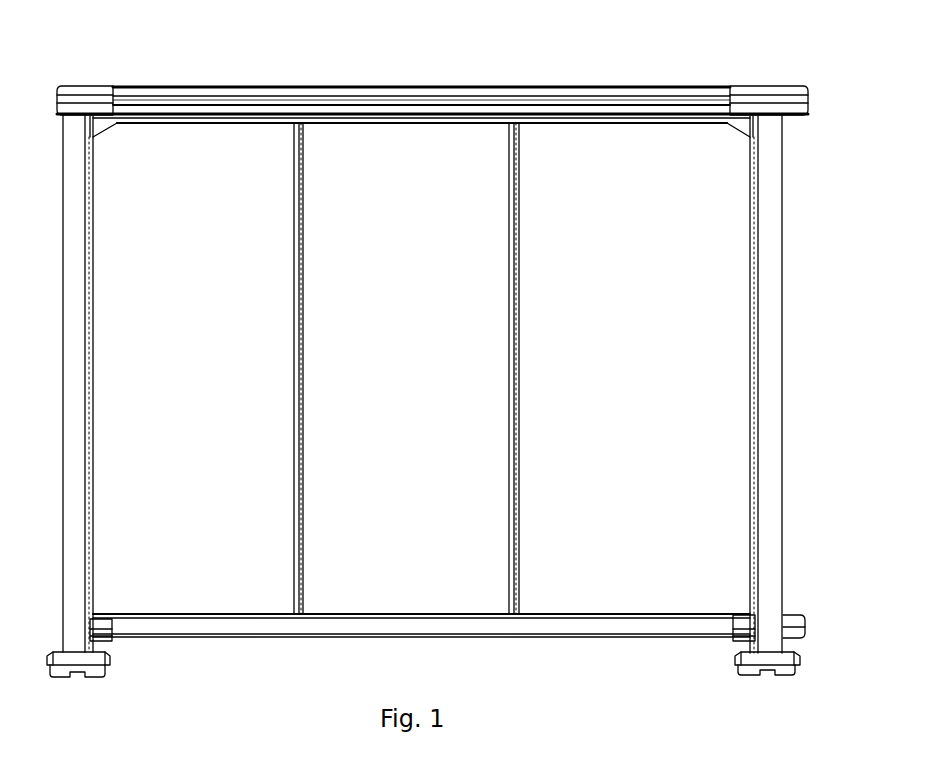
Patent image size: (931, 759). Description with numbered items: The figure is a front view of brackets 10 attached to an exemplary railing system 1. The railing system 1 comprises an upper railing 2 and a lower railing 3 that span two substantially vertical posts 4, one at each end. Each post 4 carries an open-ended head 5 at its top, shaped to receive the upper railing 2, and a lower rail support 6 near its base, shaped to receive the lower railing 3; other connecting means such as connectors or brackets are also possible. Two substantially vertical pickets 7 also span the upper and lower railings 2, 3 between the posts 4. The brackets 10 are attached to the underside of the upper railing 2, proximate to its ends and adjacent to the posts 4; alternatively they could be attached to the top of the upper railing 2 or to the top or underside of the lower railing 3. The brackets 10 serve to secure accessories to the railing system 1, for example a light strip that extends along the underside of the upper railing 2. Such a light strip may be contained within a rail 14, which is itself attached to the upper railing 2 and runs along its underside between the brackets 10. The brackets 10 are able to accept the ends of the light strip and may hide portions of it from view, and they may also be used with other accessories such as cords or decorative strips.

The railing system 1 is at (782, 62).
The upper railing 2 is at (462, 83).
The lower railing 3 is at (390, 608).
The post 4 is at (80, 420).
The open-ended head 5 is at (98, 97).
The lower rail support 6 is at (112, 638).
The picket 7 is at (513, 403).
The bracket 10 is at (103, 124).
The rail 14 is at (587, 124).